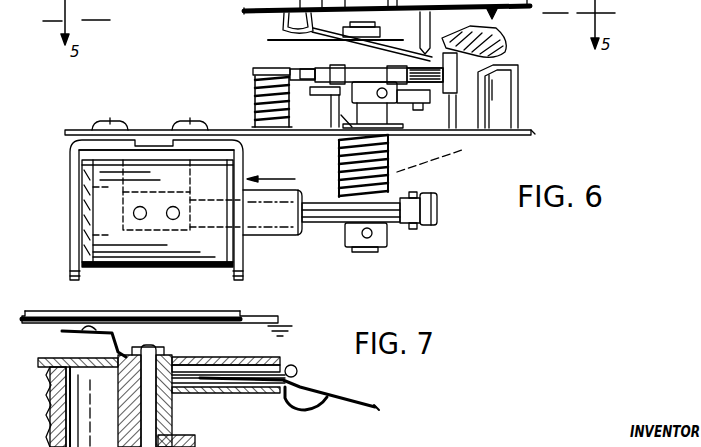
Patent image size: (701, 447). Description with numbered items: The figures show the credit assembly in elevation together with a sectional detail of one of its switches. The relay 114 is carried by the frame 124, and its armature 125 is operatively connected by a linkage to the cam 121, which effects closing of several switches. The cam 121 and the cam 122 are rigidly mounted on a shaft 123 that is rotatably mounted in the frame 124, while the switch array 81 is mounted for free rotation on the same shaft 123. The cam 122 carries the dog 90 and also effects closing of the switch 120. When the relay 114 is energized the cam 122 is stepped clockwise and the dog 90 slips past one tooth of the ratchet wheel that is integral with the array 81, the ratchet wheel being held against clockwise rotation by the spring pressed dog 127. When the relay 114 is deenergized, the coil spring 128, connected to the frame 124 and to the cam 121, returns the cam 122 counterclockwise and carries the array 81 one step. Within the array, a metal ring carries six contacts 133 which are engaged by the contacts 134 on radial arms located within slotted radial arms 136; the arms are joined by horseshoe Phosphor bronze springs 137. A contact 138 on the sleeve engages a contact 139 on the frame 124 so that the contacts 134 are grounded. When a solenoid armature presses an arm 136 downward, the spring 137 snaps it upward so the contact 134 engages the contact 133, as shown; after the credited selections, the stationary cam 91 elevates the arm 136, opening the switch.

In FIG. 6, the switch array 81 is at (258, 47).
In FIG. 7, the switch array 81 is at (296, 356).
In FIG. 6, the dog 90 is at (455, 60).
In FIG. 6, the stationary element (cam) 91 is at (520, 90).
In FIG. 6, the relay 114 is at (182, 188).
In FIG. 6, the switch 120 is at (381, 99).
In FIG. 6, the cam 121 is at (393, 205).
In FIG. 6, the cam 122 is at (330, 98).
In FIG. 6, the shaft 123 is at (444, 158).
In FIG. 6, the frame 124 is at (387, 233).
In FIG. 6, the armature 125 is at (272, 212).
In FIG. 6, the spring pressed dog 127 is at (253, 72).
In FIG. 6, the coil spring 128 is at (387, 166).
In FIG. 7, the contacts 133 is at (257, 357).
In FIG. 7, the contacts 134 is at (225, 353).
In FIG. 6, the slotted radial arms 136 is at (508, 25).
In FIG. 7, the slotted radial arms 136 is at (383, 389).
In FIG. 7, the horseshoe Phosphor bronze springs 137 is at (336, 387).
In FIG. 6, the contact 138 is at (380, 18).
In FIG. 7, the contact 138 is at (66, 334).
In FIG. 7, the contact 139 is at (258, 441).